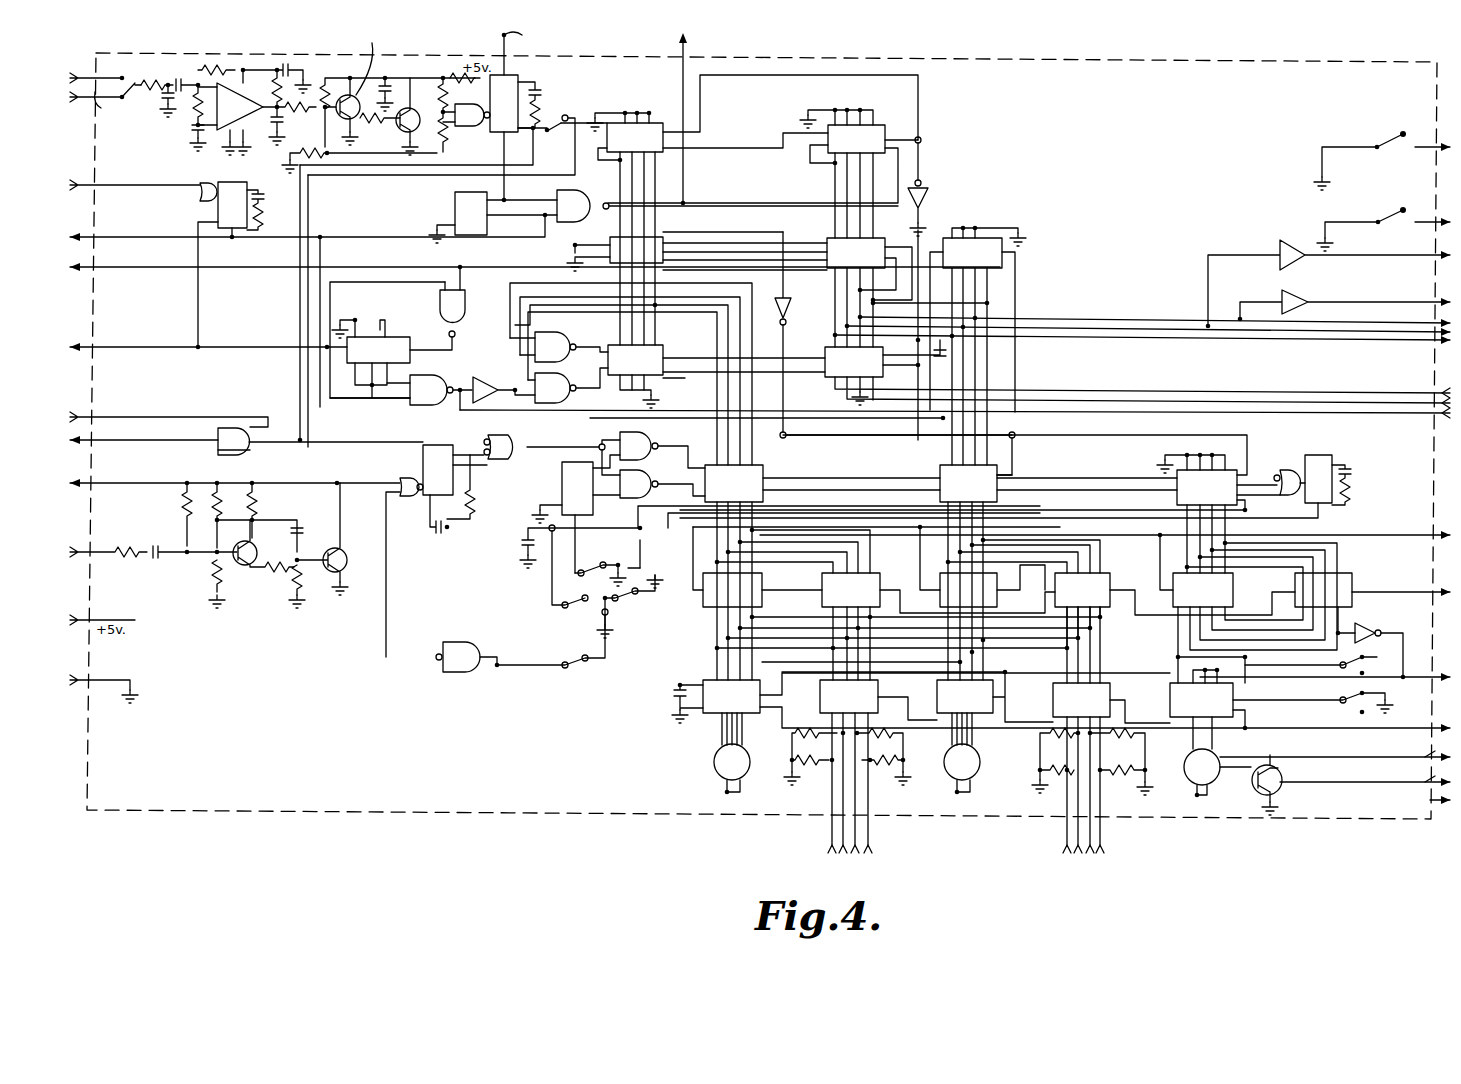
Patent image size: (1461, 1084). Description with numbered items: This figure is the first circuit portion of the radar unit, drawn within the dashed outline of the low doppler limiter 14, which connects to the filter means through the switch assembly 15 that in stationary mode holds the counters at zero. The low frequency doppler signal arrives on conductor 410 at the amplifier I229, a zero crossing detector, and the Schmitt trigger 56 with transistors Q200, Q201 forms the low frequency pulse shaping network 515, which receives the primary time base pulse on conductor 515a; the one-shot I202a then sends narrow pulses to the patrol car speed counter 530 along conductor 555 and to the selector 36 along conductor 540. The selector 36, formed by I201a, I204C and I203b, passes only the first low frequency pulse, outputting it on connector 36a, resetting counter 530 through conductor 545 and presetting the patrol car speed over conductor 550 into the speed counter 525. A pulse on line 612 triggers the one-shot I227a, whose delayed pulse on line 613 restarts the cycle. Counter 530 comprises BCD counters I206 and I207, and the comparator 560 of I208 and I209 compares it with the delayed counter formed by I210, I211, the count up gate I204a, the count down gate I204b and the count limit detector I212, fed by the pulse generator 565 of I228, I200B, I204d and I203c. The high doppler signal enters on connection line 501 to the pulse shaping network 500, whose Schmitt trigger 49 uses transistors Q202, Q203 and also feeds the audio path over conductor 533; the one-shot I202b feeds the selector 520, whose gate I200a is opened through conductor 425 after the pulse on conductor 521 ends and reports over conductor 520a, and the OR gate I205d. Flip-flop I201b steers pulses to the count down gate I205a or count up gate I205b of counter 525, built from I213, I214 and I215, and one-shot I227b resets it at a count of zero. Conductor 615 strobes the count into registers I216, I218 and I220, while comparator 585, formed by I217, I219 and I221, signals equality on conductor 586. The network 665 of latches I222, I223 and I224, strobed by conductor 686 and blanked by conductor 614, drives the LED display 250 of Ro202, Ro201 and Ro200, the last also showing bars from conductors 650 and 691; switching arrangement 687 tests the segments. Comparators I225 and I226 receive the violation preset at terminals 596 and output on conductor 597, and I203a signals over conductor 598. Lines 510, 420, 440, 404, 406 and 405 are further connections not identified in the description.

The low doppler limiter 14 is at (243, 56).
The switch assembly 15 is at (126, 82).
The Schmitt trigger 56 is at (372, 62).
The conductor 410 is at (113, 108).
The low frequency doppler pulse shaping network 515 is at (480, 50).
The conductor 515a is at (532, 35).
The connector 36a is at (690, 45).
The conductor 555 is at (580, 130).
The patrol car speed counter 530 is at (662, 100).
The conductor 540 is at (502, 148).
The conductor 545 is at (748, 204).
The conductor 550 is at (714, 230).
The patrol car's speed comparator 560 is at (814, 235).
The line 612 is at (95, 186).
The line 510 is at (95, 268).
The line 613 is at (95, 348).
The conductor 425 is at (90, 420).
The conductor 521 is at (298, 393).
The delayed counter count pulse generator 565 is at (452, 351).
The low frequency doppler pulse selector 36 is at (410, 214).
The conductor 520a is at (95, 443).
The first high frequency doppler pulse selector 520 is at (225, 458).
The conductor 533 is at (95, 486).
The connection line 501 is at (85, 557).
The Schmitt trigger 49 is at (274, 510).
The high frequency doppler pulse shaping network 500 is at (345, 627).
The speed counter 525 is at (877, 465).
The approaching vehicle speed comparator 585 is at (876, 615).
The LED display 250 is at (712, 769).
The input terminals 596 is at (825, 838).
The display driver and latch network 665 is at (1284, 733).
The switching arrangement 687 is at (1322, 686).
The conductor 686 is at (1428, 757).
The conductor 691 is at (1432, 779).
The conductor 650 is at (1432, 805).
The conductor 597 is at (1432, 725).
The conductor 598 is at (1434, 630).
The conductor 614 is at (1428, 670).
The conductor 586 is at (1434, 594).
The conductor 615 is at (1434, 531).
The output line 420 is at (1434, 266).
The output line 440 is at (1434, 296).
The line 404 is at (1427, 314).
The line 406 is at (1432, 340).
The line 405 is at (1441, 341).
The amplifier I229 is at (238, 108).
The transistor Q200 is at (339, 119).
The transistor Q201 is at (407, 115).
The transistor Q202 is at (234, 556).
The transistor Q203 is at (341, 551).
The one-shot I202a is at (420, 118).
The one-shot I202b is at (423, 475).
The J-K flip-flop I201a is at (455, 194).
The J-K flip-flop I201b is at (562, 495).
The one-shot I227a is at (212, 198).
The one-shot I227b is at (1328, 455).
The gate I204C is at (560, 231).
The gate I204d is at (424, 308).
The count down gate I204b is at (585, 318).
The count up gate I204a is at (558, 392).
The integrated circuit I203a is at (1355, 600).
The amplifier I203b is at (895, 353).
The integrated circuit I203c is at (500, 372).
The gate I200a is at (253, 454).
The gate I200B is at (430, 407).
The count down gate I205a is at (630, 410).
The count up gate I205b is at (619, 502).
The OR gate I205d is at (476, 458).
The binary 4 bit counter I228 is at (387, 340).
The binary coded decimal counter I206 is at (754, 210).
The binary coded decimal counter I207 is at (768, 173).
The comparator I208 is at (697, 251).
The comparator I209 is at (869, 292).
The units counter I210 is at (716, 376).
The tens counter I211 is at (885, 371).
The count limit detector I212 is at (978, 345).
The unit counter I213 is at (822, 572).
The ten counter I214 is at (1048, 572).
The hundred counter I215 is at (980, 504).
The speed storage register I216 is at (896, 588).
The comparator I217 is at (938, 626).
The speed storage register I218 is at (903, 619).
The comparator I219 is at (1175, 628).
The speed storage register I220 is at (1288, 612).
The comparator I221 is at (1325, 604).
The composite integrated circuit I222 is at (1061, 709).
The composite integrated circuit I223 is at (995, 708).
The composite integrated circuit I224 is at (1208, 708).
The comparator I225 is at (860, 766).
The comparator I226 is at (1101, 768).
The one segment display Ro200 is at (1317, 782).
The seven segment light emitting diode display Ro201 is at (962, 778).
The seven segment light emitting diode display Ro202 is at (732, 778).